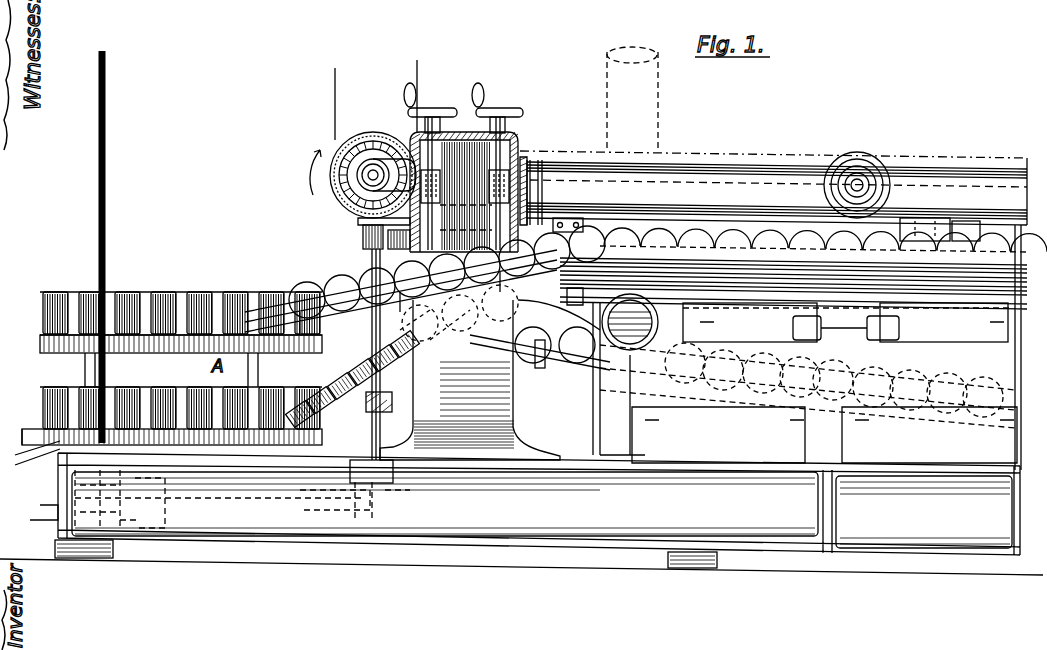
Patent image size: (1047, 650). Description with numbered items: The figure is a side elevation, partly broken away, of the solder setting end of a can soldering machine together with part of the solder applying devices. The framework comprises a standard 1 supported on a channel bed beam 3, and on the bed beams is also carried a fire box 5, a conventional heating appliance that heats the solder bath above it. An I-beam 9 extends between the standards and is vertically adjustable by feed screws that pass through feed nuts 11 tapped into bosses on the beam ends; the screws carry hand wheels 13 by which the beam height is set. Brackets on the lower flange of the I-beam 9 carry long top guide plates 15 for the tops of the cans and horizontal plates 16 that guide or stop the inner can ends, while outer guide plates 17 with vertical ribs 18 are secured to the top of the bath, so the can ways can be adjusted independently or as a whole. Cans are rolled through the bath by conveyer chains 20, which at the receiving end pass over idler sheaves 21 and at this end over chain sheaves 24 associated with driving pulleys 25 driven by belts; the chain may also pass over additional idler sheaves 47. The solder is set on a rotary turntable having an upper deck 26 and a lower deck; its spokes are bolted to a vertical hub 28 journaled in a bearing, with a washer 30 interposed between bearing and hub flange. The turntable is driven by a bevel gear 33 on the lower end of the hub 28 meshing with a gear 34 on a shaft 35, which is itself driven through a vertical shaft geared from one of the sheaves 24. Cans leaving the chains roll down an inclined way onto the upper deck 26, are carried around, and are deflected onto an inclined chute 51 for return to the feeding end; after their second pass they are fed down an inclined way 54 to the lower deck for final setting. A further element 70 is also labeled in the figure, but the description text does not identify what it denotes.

The standard 1 is at (520, 428).
The bed beam 3 is at (521, 491).
The fire box 5 is at (605, 418).
The I-beam 9 is at (935, 185).
The feed nut 11 is at (458, 203).
The hand wheel 13 is at (500, 100).
The top guide plate 15 is at (947, 227).
The inner end guide plate 16 is at (850, 253).
The outer guide plate 17 is at (993, 278).
The vertical rib 18 is at (316, 284).
The conveyer chain 20 is at (412, 134).
The idler sheave 21 is at (352, 426).
The chain sheave 24 is at (335, 143).
The driving pulley 25 is at (352, 188).
The upper deck 26 is at (181, 334).
The vertical shaft or elongated hub 28 is at (88, 370).
The washer 30 is at (374, 408).
The bevel gear 33 is at (58, 500).
The gear 34 is at (146, 542).
The shaft 35 is at (182, 508).
The additional idler sheave 47 is at (834, 187).
The inclined chute 51 is at (585, 373).
The inclined way 54 is at (382, 382).
The brush 70 is at (463, 132).